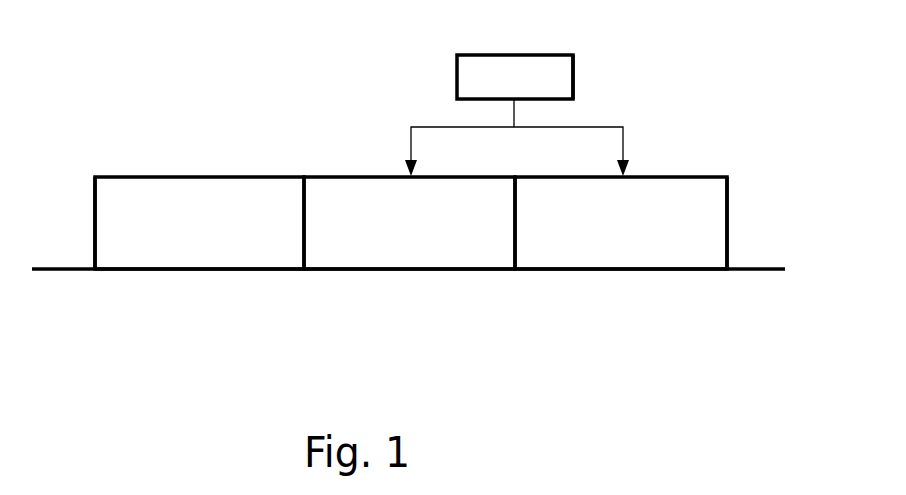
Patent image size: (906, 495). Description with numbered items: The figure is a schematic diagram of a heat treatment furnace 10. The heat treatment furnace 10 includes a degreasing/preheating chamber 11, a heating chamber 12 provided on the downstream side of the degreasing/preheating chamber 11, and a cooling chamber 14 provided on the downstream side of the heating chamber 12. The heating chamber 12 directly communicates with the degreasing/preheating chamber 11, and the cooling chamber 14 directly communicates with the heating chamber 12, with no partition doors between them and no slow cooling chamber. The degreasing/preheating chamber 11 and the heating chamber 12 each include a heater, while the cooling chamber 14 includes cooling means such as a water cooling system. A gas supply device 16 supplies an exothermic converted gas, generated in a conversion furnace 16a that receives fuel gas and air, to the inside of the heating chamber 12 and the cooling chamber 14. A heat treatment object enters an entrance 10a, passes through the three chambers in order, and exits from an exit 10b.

The heat treatment furnace 10 is at (466, 325).
The entrance 10a is at (78, 222).
The exit 10b is at (742, 222).
The degreasing/preheating chamber 11 is at (187, 271).
The heating chamber 12 is at (387, 271).
The cooling chamber 14 is at (600, 271).
The gas supply device 16 is at (420, 68).
The conversion furnace 16a is at (573, 73).